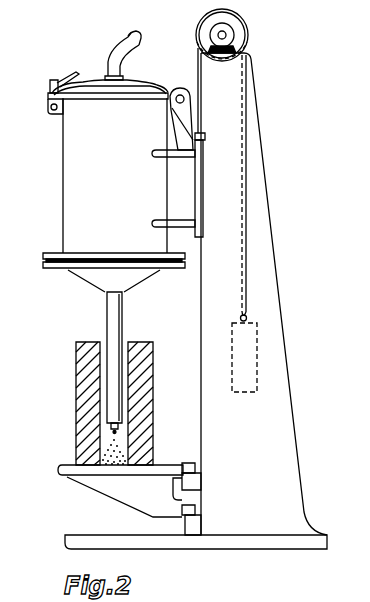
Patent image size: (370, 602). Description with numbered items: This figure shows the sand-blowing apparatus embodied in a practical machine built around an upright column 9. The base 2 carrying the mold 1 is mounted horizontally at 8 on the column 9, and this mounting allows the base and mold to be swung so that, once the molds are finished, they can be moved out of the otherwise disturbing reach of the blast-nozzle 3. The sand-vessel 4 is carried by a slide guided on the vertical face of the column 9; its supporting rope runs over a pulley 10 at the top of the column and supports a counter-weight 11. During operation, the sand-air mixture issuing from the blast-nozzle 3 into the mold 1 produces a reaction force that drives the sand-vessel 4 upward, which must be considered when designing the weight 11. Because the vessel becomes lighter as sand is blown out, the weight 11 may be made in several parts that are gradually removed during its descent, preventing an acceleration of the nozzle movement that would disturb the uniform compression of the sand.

The mold 1 is at (152, 384).
The base 2 is at (100, 487).
The blast-nozzle 3 is at (117, 311).
The sand-vessel 4 is at (68, 172).
The mounting 8 is at (182, 526).
The column 9 is at (294, 430).
The pulley 10 is at (197, 40).
The counter-weight 11 is at (240, 394).